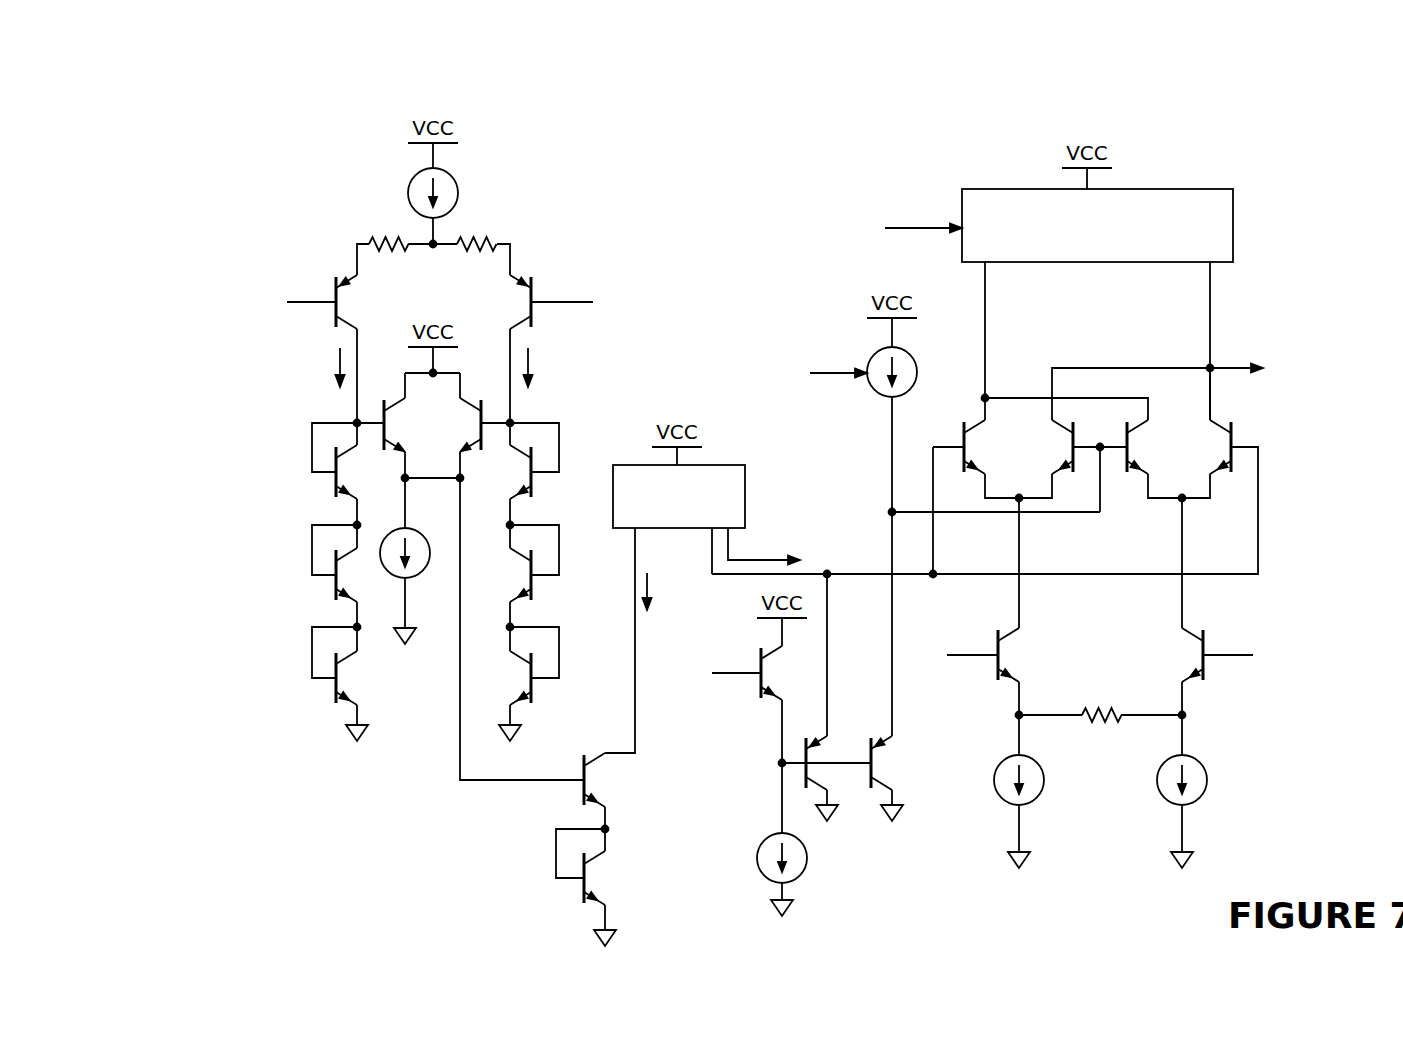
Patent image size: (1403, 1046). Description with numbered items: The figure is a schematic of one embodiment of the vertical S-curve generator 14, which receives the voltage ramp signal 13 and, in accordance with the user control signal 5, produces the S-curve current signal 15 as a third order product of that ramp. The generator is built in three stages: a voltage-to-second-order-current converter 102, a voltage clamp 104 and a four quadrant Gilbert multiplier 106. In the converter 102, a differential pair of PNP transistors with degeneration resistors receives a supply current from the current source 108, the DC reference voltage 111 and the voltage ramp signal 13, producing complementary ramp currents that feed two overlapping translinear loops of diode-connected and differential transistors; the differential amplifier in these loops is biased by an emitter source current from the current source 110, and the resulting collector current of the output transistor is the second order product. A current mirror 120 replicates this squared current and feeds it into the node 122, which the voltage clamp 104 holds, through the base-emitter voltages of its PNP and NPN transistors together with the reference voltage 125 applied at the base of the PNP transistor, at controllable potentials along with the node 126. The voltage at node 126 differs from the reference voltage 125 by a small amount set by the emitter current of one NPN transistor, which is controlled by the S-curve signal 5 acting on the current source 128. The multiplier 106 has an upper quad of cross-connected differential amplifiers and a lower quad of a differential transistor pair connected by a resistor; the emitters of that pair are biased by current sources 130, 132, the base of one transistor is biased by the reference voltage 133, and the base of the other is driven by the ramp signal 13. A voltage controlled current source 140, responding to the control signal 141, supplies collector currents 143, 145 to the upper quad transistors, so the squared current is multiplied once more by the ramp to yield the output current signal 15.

The vertical S-curve generator 14 is at (263, 792).
The voltage-to-second-order-current converter 102 is at (405, 805).
The current source IA 108 is at (409, 187).
The DC reference voltage 111 is at (567, 294).
The voltage ramp signal 13 is at (320, 308).
The current source IB 110 is at (421, 534).
The current mirror 120 is at (746, 490).
The node 122 is at (829, 572).
The node 126 is at (890, 510).
The voltage clamp 104 is at (867, 860).
The reference voltage 125 is at (740, 680).
The current source 128 is at (916, 375).
The user control signal SCON 5 is at (840, 376).
The four quadrant Gilbert multiplier 106 is at (1108, 860).
The voltage controlled current source 140 is at (996, 189).
The control signal 141 is at (912, 226).
The collector current 143 is at (986, 302).
The collector current 145 is at (1210, 302).
The S-curve current signal IS 15 is at (1227, 366).
The current source 130 is at (1043, 770).
The current source 132 is at (1207, 770).
The reference voltage 133 is at (1230, 658).